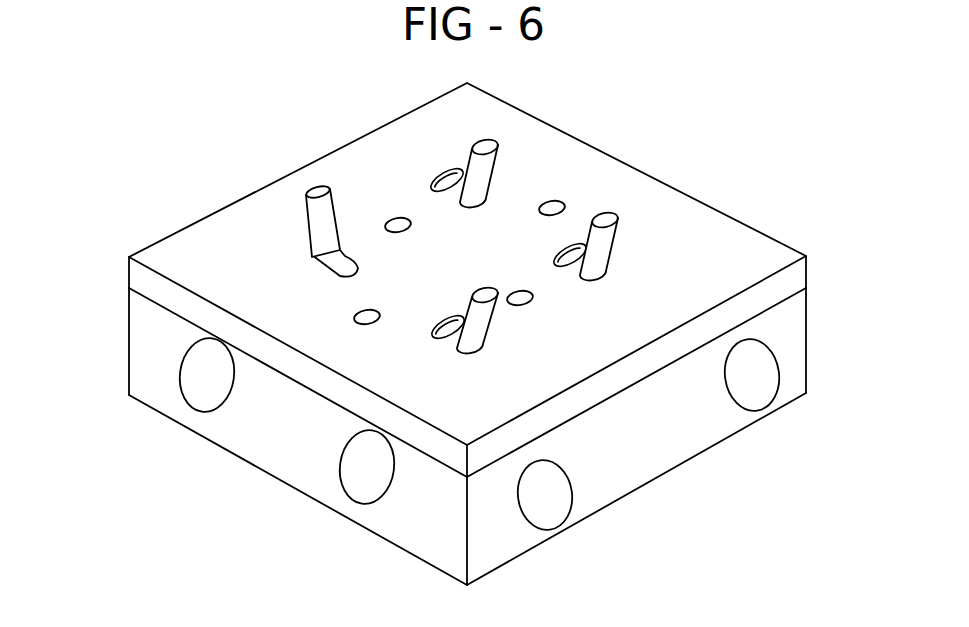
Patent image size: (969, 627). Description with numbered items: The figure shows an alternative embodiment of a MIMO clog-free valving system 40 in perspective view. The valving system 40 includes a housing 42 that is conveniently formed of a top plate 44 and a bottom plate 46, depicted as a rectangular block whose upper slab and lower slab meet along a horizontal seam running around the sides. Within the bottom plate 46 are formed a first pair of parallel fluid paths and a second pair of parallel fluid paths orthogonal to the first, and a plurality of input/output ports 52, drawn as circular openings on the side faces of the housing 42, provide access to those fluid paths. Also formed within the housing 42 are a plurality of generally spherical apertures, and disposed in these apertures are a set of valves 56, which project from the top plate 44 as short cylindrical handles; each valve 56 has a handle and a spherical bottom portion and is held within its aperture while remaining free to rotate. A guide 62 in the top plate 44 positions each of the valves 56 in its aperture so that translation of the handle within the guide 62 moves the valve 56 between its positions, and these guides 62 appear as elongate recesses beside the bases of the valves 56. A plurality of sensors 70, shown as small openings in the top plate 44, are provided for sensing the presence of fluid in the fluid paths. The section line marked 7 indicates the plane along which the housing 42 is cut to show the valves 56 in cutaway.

The valving system 40 is at (508, 334).
The housing 42 is at (775, 408).
The top plate 44 is at (806, 327).
The bottom plate 46 is at (806, 265).
The input/output ports 52 is at (205, 401).
The valves 56 is at (618, 231).
The guide 62 is at (357, 266).
The sensors 70 is at (555, 202).
The section line 7- 7 is at (333, 409).